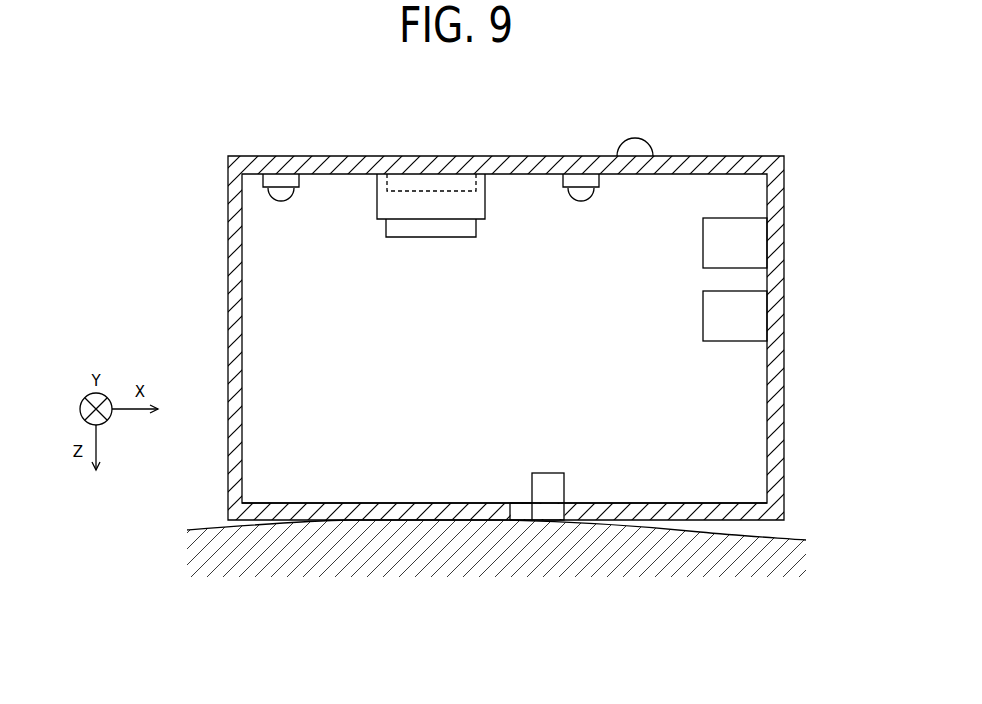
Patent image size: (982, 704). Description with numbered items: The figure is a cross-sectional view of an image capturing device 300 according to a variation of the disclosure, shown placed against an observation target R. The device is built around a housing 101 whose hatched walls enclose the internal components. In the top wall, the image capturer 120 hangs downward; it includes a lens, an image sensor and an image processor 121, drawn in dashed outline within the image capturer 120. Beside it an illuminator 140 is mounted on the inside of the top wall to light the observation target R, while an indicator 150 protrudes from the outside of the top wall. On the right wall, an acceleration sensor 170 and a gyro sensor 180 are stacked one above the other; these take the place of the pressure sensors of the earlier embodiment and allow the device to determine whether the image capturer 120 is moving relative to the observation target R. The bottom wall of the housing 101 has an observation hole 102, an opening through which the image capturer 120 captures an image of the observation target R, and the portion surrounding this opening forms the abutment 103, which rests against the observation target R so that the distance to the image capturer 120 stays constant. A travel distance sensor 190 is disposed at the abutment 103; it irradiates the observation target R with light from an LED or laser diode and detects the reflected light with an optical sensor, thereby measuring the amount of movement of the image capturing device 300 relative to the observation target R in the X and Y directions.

The image capturing device 300 is at (455, 140).
The housing 101 is at (337, 156).
The observation hole 102 is at (352, 510).
The abutment 103 is at (525, 517).
The image capturer 120 is at (377, 199).
The image processor 121 is at (407, 194).
The illuminator 140 is at (266, 199).
The indicator 150 is at (640, 139).
The acceleration sensor 170 is at (736, 218).
The gyro sensor 180 is at (736, 291).
The travel distance sensor 190 is at (560, 473).
The observation target R is at (706, 531).